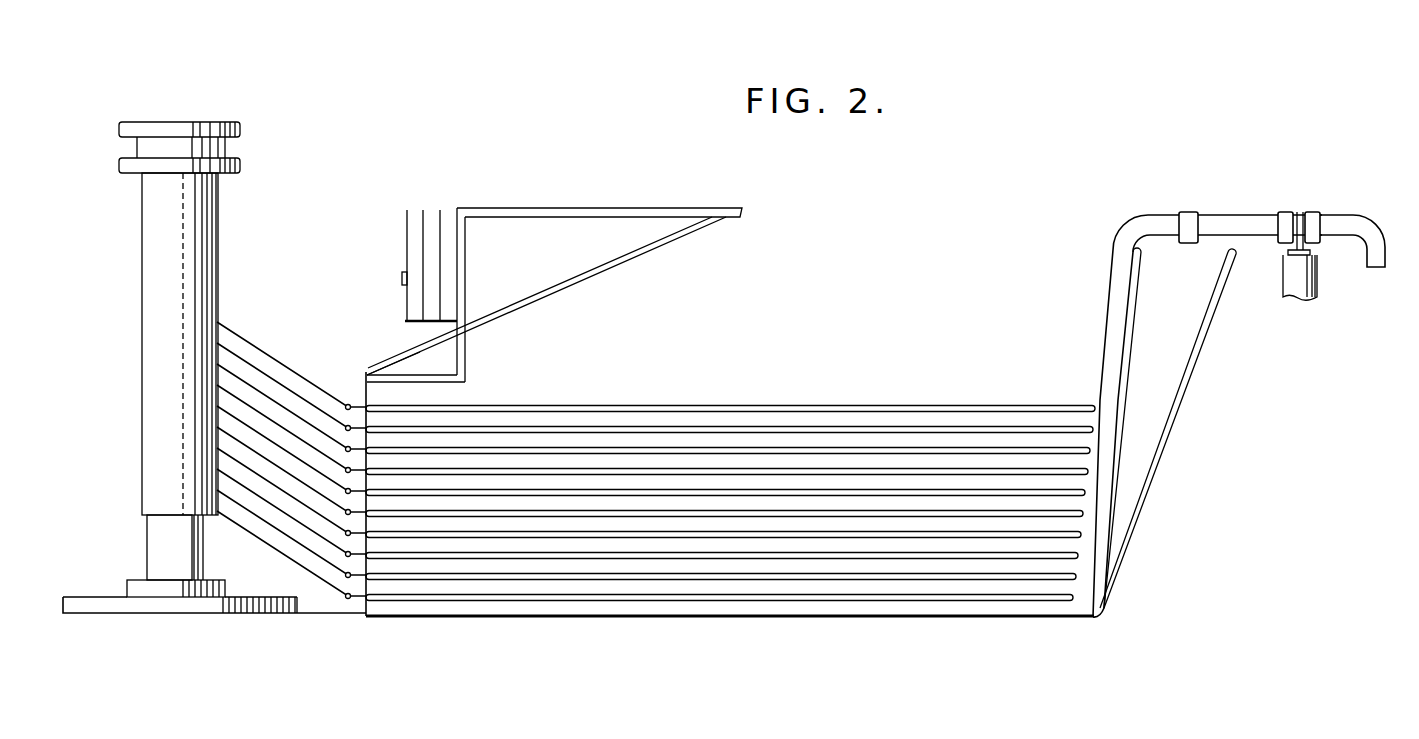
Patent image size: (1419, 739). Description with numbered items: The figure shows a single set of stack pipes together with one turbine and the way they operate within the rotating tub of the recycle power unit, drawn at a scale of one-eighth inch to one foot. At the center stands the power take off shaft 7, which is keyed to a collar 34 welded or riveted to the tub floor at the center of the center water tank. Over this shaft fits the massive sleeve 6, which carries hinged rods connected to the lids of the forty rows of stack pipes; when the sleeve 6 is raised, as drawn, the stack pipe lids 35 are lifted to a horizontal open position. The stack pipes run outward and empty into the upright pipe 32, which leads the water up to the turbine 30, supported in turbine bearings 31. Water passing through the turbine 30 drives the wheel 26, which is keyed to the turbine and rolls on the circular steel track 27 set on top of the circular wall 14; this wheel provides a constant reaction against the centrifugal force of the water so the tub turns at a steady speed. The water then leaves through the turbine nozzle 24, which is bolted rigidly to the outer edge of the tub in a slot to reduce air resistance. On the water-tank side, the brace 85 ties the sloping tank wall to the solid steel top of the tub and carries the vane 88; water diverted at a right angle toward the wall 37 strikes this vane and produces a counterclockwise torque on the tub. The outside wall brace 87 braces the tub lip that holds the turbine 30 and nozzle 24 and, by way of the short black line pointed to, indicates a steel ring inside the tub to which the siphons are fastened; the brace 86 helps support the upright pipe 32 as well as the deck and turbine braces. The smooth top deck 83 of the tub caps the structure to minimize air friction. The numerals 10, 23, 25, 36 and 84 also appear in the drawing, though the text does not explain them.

The sleeve 6 is at (152, 284).
The power take off shaft 7 is at (154, 560).
The supply lines 10 is at (428, 233).
The circular wall 14 is at (1305, 278).
The horizontal tubes 23 is at (767, 405).
The turbine nozzle 24 is at (1390, 242).
The bar 25 is at (403, 323).
The wheel 26 is at (1342, 182).
The circular steel track 27 is at (1283, 252).
The turbine 30 is at (1247, 210).
The turbine bearings 31 is at (1185, 205).
The upright pipe 32 is at (1097, 325).
The collar 34 is at (167, 590).
The stack pipe lids 35 is at (357, 400).
The inclined tubes 36 is at (285, 358).
The wall 37 is at (470, 277).
The top deck 83 is at (557, 205).
The block 84 is at (393, 277).
The brace 85 is at (610, 268).
The brace 86 is at (1133, 358).
The outside wall brace 87 is at (1208, 293).
The vane 88 is at (397, 348).